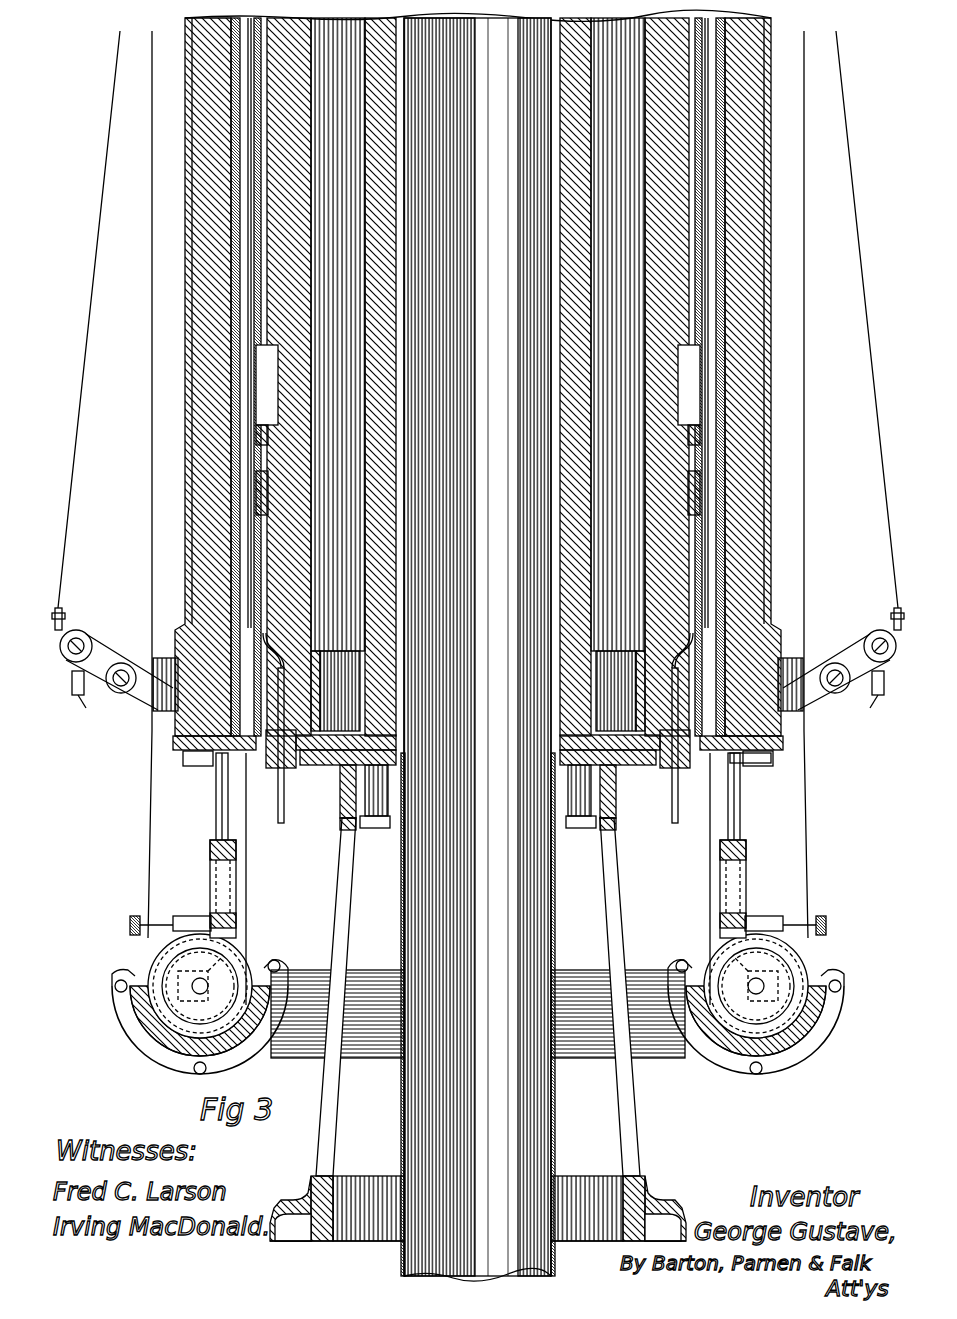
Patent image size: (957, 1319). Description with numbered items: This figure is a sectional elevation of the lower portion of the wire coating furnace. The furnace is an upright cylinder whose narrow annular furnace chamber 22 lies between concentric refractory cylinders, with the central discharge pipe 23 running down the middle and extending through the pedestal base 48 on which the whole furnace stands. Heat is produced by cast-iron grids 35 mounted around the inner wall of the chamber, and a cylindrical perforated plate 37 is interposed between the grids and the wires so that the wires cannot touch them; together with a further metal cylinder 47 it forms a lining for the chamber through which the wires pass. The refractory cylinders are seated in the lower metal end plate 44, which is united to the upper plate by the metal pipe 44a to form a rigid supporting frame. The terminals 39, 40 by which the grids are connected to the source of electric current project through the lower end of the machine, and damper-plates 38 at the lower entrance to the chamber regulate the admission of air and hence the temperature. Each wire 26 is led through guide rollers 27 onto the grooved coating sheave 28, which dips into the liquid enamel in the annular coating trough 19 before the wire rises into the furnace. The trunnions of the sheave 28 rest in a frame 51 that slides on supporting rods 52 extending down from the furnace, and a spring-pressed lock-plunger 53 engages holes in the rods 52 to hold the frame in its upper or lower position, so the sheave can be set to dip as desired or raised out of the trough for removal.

The annular coating trough 19 is at (150, 1042).
The annular furnace chamber 22 is at (235, 290).
The central discharge pipe 23 is at (478, 649).
The wire 26 is at (144, 368).
The guide rollers 27 is at (862, 640).
The coating sheave 28 is at (235, 950).
The cast-iron grids 35 is at (250, 247).
The cylindrical perforated plate 37 is at (245, 322).
The damper-plates 38 is at (228, 840).
The terminal 39 is at (310, 778).
The terminal 40 is at (668, 790).
The metal end plate 44 is at (612, 770).
The metal cylinder or pipe 44a is at (462, 266).
The metal cylinder 47 is at (225, 172).
The pedestal base 48 is at (612, 892).
The frame 51 is at (228, 882).
The supporting rods 52 is at (205, 800).
The spring-pressed lock-plunger 53 is at (125, 908).